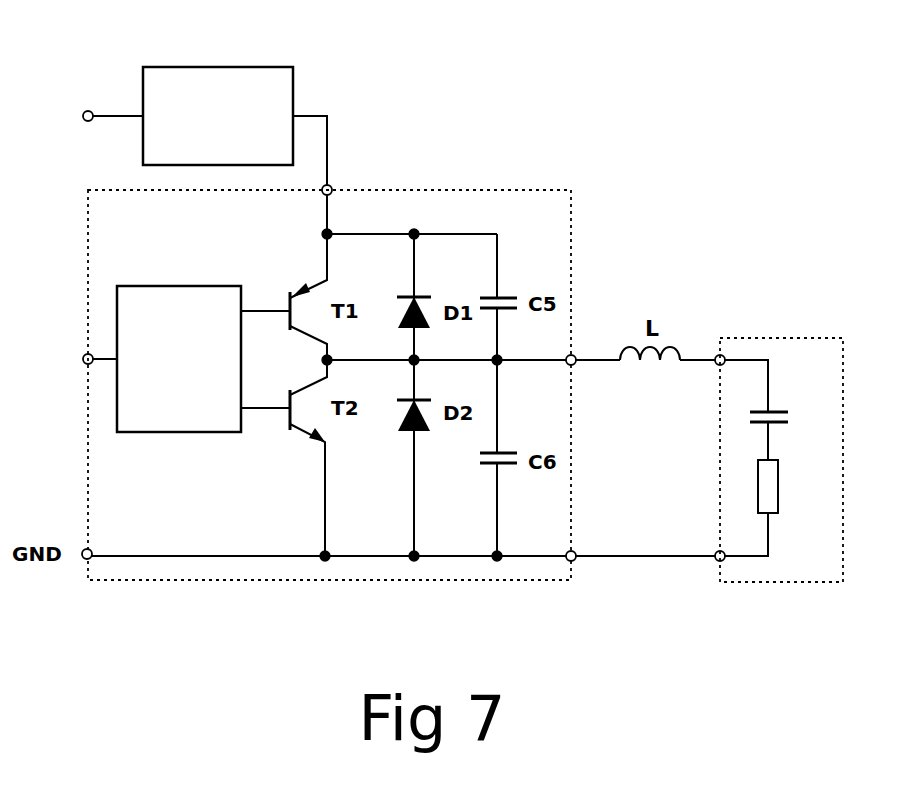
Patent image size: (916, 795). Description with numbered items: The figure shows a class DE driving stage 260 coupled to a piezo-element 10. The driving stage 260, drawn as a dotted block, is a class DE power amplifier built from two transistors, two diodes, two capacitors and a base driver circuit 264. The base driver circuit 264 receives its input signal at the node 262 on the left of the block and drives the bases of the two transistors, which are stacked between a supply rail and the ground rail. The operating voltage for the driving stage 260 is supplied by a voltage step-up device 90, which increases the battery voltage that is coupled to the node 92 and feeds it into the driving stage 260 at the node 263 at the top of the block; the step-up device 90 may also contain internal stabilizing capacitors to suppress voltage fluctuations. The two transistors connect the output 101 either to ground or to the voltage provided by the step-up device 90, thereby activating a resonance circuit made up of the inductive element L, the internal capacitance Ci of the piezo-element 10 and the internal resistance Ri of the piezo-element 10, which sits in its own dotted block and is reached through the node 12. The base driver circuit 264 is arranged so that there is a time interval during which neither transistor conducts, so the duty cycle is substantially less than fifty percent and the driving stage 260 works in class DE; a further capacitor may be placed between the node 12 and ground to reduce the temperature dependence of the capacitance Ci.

The voltage step-up device 90 is at (228, 67).
The node 92 is at (85, 111).
The supply terminal 263 is at (331, 186).
The driving stage 260 is at (283, 580).
The base driver circuit 264 is at (172, 432).
The driver input terminal 262 is at (85, 355).
The output 101 is at (576, 364).
The node 12 is at (715, 364).
The piezo-element 10 is at (780, 582).